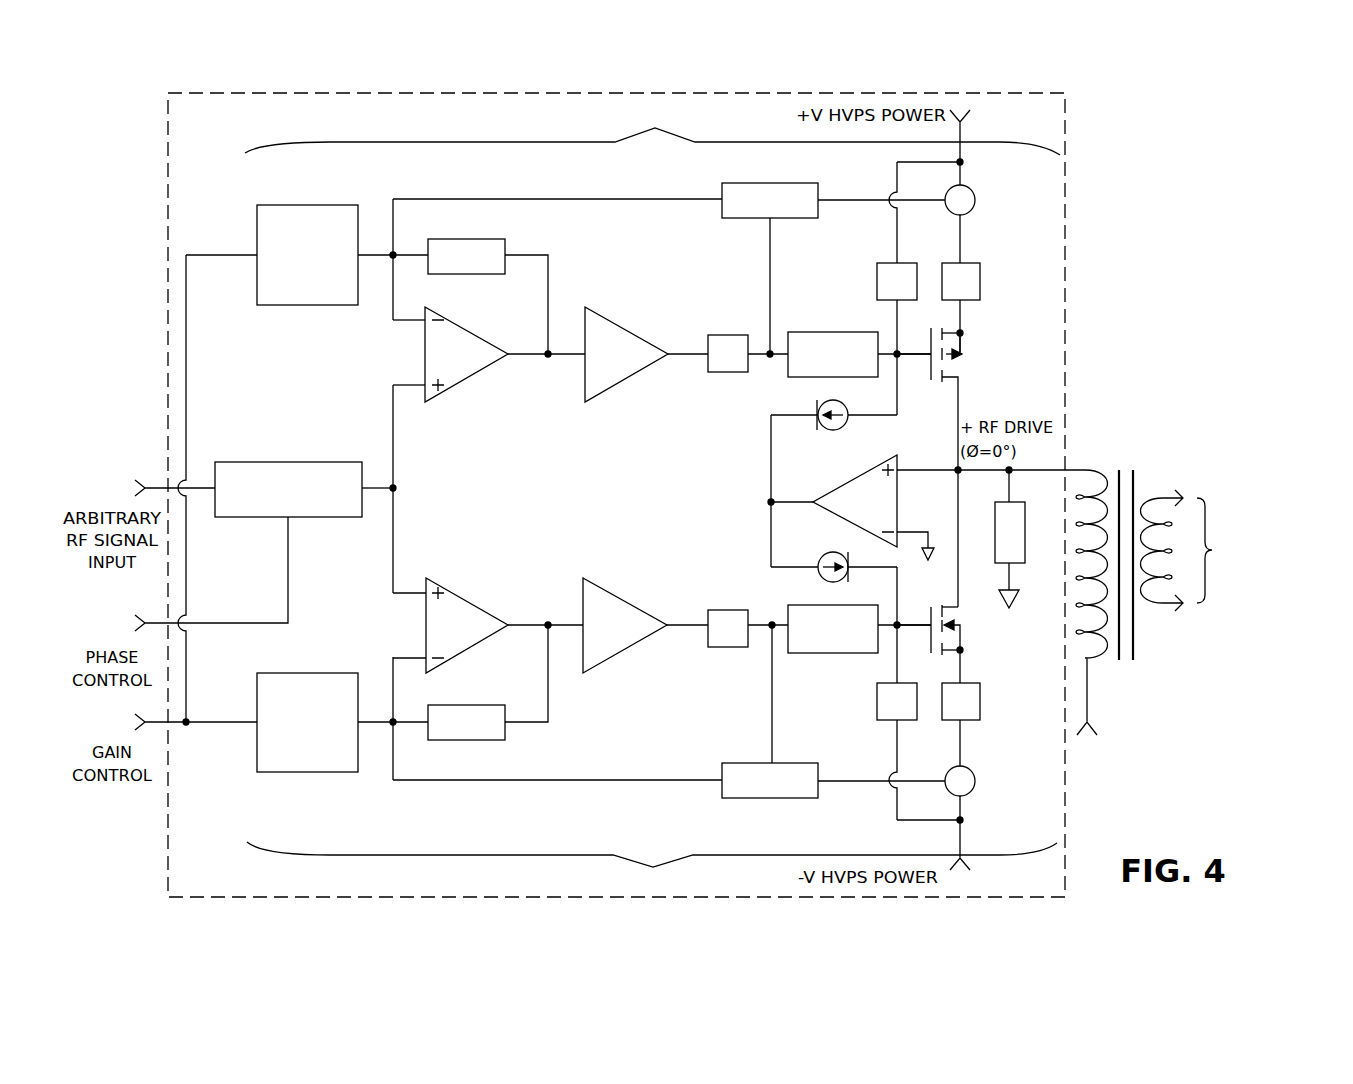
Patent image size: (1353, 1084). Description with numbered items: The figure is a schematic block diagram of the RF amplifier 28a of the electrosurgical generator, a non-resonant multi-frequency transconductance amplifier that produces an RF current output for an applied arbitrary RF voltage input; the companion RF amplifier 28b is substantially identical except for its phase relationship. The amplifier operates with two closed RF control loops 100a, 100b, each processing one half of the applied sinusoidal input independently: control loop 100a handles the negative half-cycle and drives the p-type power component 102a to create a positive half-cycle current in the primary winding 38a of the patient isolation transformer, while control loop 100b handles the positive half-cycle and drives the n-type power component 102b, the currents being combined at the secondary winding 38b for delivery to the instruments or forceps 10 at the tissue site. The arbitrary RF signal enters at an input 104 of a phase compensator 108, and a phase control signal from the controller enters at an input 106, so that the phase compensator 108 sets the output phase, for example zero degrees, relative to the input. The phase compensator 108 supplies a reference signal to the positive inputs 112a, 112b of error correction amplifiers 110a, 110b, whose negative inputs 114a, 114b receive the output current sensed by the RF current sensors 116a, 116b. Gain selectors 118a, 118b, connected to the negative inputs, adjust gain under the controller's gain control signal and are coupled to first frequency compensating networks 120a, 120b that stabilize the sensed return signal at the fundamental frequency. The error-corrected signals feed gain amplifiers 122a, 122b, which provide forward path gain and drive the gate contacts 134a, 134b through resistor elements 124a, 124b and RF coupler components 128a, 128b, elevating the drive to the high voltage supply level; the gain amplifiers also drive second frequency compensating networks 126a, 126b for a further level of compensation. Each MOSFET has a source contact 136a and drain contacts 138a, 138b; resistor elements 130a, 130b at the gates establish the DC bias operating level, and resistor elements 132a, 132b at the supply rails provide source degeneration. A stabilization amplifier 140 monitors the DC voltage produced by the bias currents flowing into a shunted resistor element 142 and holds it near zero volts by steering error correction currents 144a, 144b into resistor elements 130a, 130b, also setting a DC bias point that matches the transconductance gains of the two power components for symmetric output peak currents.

The RF amplifier 28a is at (1078, 128).
The RF amplifier 28b is at (1089, 732).
The RF control loop 100a is at (652, 129).
The RF control loop 100b is at (652, 869).
The power component 102a is at (969, 343).
The power component 102b is at (970, 642).
The input 104 is at (198, 483).
The input 106 is at (290, 540).
The phase compensator 108 is at (315, 462).
The error correction amplifier 110a is at (460, 327).
The error correction amplifier 110b is at (480, 606).
The positive input 112a is at (420, 385).
The positive input 112b is at (420, 593).
The negative input 114a is at (420, 320).
The negative input 114b is at (420, 658).
The RF current sensor 116a is at (971, 189).
The RF current sensor 116b is at (971, 768).
The gain selector 118a is at (317, 198).
The gain selector 118b is at (316, 672).
The first frequency compensating network 120a is at (478, 239).
The first frequency compensating network 120b is at (480, 740).
The gain amplifier 122a is at (628, 330).
The gain amplifier 122b is at (626, 652).
The resistor element 124a is at (722, 335).
The resistor element 124b is at (726, 647).
The second frequency compensating network 126a is at (770, 183).
The second frequency compensating network 126b is at (770, 798).
The RF coupler components 128a is at (812, 332).
The RF coupler components 128b is at (812, 653).
The resistor element 130a is at (878, 263).
The resistor element 130b is at (884, 720).
The resistor element 132a is at (945, 263).
The resistor element 132b is at (945, 720).
The gate contact 134a is at (928, 335).
The gate contact 134b is at (928, 612).
The source contact 136a is at (965, 340).
The drain contact 138a is at (960, 378).
The drain contact 138b is at (962, 680).
The stabilization amplifier 140 is at (862, 470).
The resistor element 142 is at (995, 522).
The steering error correction current 144a is at (846, 424).
The steering error correction current 144b is at (830, 556).
The primary winding 38a is at (1090, 655).
The secondary winding 38b is at (1173, 493).
The instruments or forceps 10 is at (1266, 550).